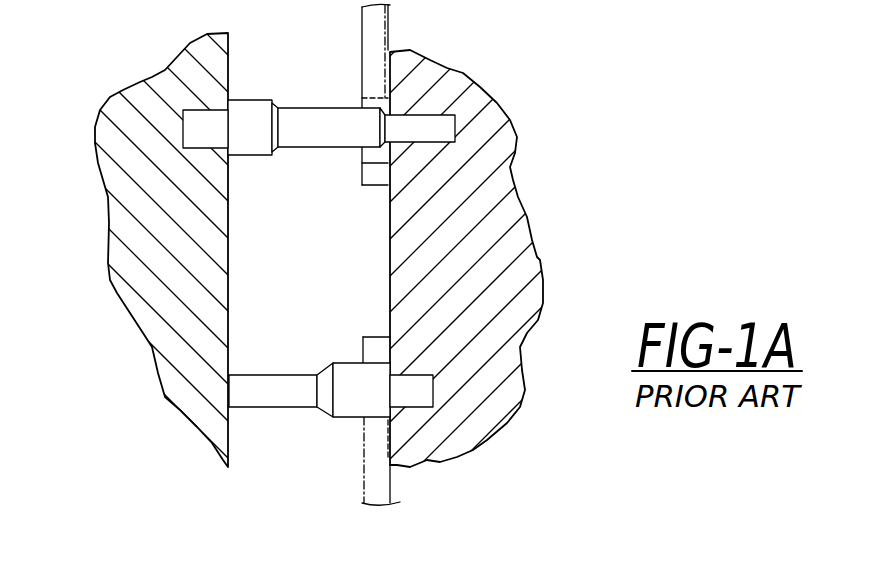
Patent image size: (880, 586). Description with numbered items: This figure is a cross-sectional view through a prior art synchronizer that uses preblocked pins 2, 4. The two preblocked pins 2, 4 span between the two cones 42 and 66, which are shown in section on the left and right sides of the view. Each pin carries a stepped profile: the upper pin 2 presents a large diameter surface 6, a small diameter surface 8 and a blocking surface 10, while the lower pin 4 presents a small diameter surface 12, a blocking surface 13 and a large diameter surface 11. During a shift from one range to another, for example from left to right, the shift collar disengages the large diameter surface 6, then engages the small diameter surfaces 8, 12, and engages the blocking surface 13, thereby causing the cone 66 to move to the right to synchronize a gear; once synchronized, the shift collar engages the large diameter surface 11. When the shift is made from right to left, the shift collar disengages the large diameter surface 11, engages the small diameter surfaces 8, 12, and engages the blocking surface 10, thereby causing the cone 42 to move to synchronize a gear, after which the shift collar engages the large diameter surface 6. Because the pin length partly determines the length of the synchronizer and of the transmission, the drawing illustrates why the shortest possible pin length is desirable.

The preblocked pin 2 is at (319, 137).
The preblocked pin 4 is at (331, 402).
The large diameter surface 6 is at (260, 98).
The small diameter surface 8 is at (332, 148).
The blocking surface 10 is at (275, 157).
The large diameter surface 11 is at (346, 417).
The small diameter surface 12 is at (272, 373).
The blocking surface 13 is at (325, 363).
The cone 42 is at (130, 235).
The cone 66 is at (516, 236).